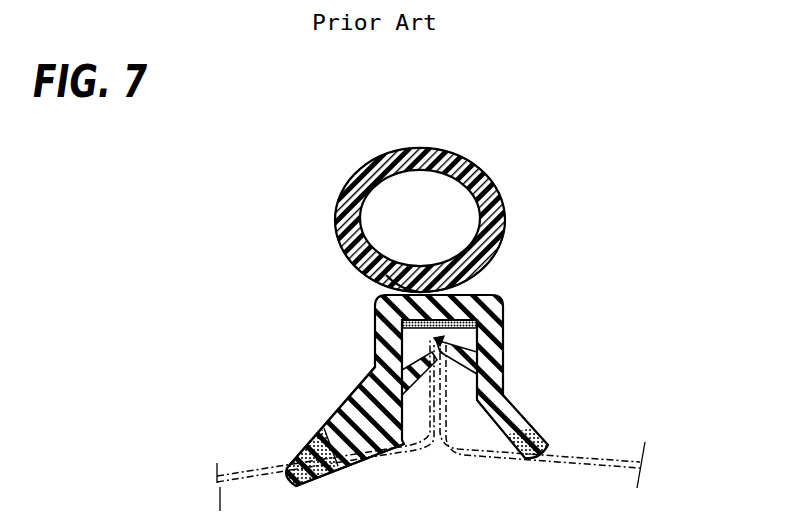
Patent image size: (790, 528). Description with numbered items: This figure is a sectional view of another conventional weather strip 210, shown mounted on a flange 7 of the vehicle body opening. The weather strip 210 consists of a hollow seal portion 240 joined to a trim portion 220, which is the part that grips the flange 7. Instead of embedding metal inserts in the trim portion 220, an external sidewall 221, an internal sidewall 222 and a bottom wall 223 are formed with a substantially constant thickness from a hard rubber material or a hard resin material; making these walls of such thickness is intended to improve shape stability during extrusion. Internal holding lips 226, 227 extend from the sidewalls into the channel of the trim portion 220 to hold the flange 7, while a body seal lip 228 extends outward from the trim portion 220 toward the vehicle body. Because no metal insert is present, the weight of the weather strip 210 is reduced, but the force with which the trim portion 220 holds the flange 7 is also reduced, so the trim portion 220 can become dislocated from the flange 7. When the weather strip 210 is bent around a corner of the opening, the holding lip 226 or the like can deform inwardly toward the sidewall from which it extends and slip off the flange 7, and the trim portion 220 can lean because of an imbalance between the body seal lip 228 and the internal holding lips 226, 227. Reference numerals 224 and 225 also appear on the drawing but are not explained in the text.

The flange 7 is at (373, 377).
The weather strip 210 is at (318, 234).
The trim portion 220 is at (505, 320).
The external sidewall 221 is at (400, 325).
The internal sidewall 222 is at (505, 350).
The bottom wall 223 is at (403, 281).
The inner leg 224 is at (318, 394).
The inner side wall 225 is at (400, 358).
The holding lip 226 is at (530, 426).
The internal holding lip 227 is at (505, 378).
The body seal lip 228 is at (303, 433).
The hollow seal portion 240 is at (510, 212).